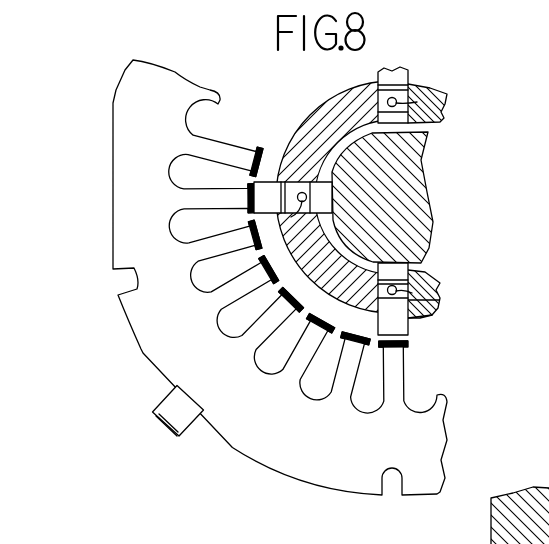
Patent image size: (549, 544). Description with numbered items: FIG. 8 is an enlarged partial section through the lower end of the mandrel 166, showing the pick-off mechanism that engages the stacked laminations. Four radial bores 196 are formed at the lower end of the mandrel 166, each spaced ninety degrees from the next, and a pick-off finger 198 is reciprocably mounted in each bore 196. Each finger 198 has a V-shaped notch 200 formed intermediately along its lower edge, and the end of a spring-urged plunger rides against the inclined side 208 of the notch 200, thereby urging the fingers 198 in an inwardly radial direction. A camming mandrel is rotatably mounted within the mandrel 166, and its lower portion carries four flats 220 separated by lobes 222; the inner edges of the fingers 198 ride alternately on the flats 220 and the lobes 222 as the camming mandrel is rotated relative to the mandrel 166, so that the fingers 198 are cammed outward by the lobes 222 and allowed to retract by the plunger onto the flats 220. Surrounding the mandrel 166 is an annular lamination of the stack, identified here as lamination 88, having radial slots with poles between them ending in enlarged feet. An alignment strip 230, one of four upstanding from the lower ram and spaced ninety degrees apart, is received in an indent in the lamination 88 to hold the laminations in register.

The body plate with radial slots 88 is at (270, 462).
The mandrel 166 is at (334, 94).
The radial bore 196 is at (386, 69).
The pick-off finger 198 is at (254, 213).
The V-shaped notch 200 is at (420, 310).
The inclined side 208 is at (417, 102).
The flat 220 is at (316, 178).
The lobe 222 is at (350, 162).
The alignment strip 230 is at (166, 426).